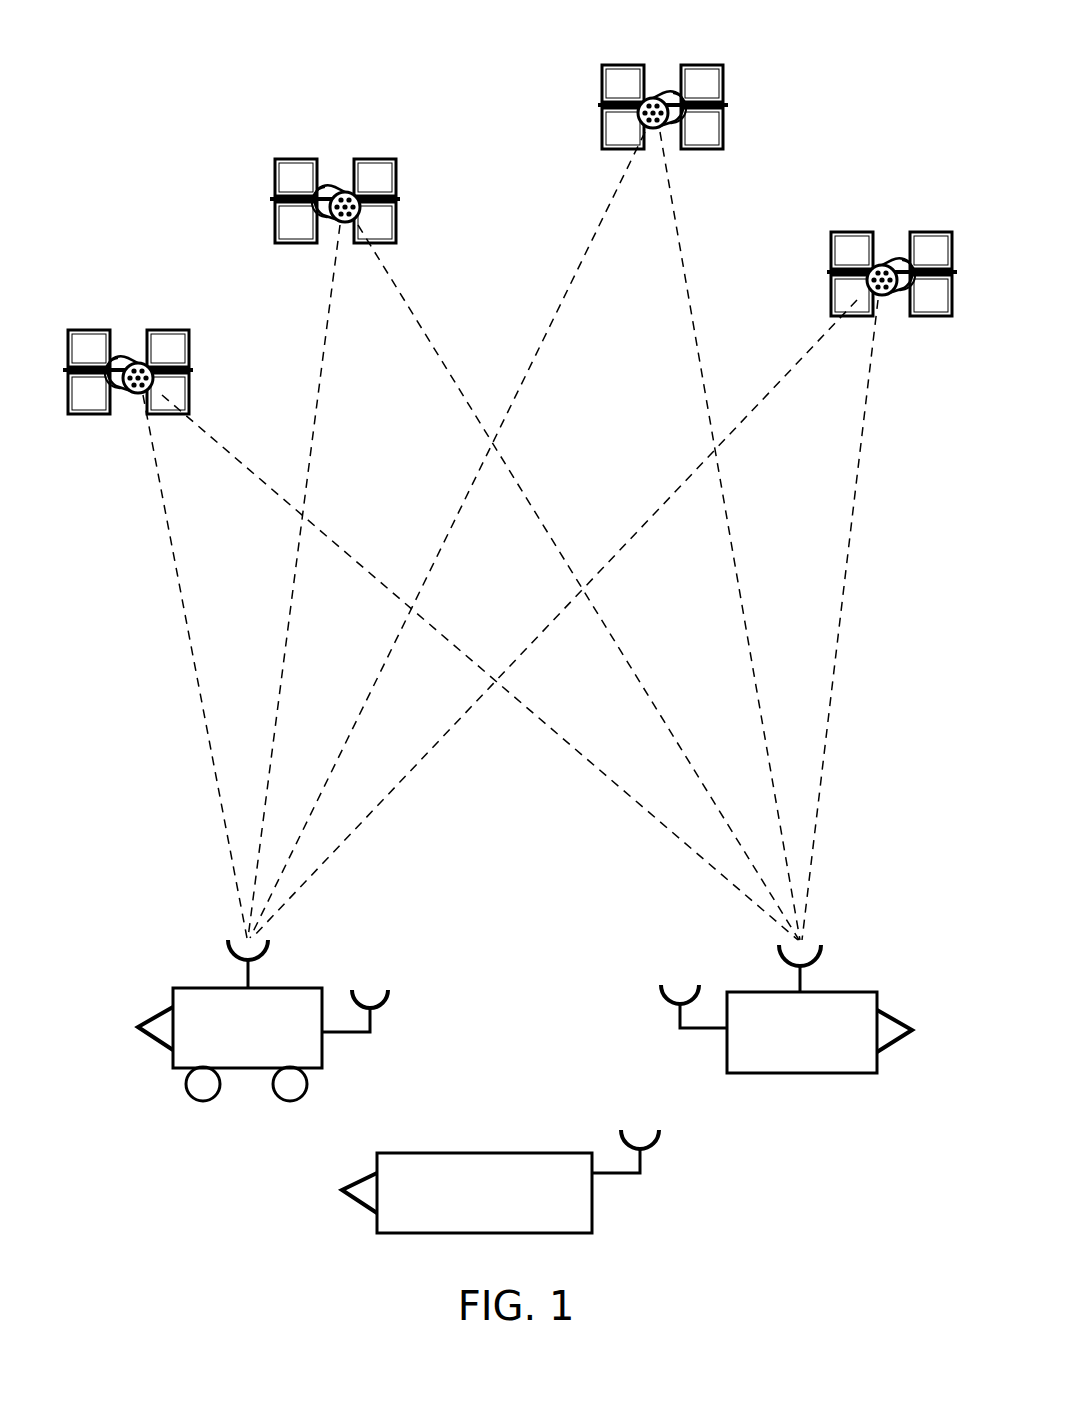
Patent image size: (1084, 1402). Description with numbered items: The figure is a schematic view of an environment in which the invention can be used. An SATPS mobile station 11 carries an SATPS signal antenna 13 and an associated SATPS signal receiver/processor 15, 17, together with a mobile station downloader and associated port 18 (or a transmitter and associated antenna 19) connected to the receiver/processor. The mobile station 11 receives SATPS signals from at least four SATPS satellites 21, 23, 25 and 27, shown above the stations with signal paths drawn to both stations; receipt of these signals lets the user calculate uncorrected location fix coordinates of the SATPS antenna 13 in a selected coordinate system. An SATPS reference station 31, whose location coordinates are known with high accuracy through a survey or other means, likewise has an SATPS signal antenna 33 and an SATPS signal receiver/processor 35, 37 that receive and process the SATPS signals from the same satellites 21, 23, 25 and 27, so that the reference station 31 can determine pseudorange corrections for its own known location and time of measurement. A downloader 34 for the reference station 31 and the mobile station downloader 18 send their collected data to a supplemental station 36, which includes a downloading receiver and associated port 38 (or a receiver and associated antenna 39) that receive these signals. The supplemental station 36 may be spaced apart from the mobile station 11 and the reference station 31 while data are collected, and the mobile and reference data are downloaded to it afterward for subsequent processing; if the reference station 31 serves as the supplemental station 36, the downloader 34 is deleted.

The SATPS mobile station 11 is at (323, 952).
The SATPS signal antenna 13 is at (247, 985).
The SATPS signal receiver/processor 15 is at (205, 1017).
The mobile receiver processor 17 is at (205, 1017).
The mobile station downloader and associated port 18 is at (165, 1027).
The mobile communications antenna 19 is at (372, 1008).
The SATPS satellite 21 is at (137, 358).
The SATPS satellite 23 is at (345, 188).
The SATPS satellite 25 is at (667, 90).
The SATPS satellite 27 is at (883, 262).
The SATPS reference station 31 is at (720, 953).
The SATPS signal antenna 33 is at (802, 982).
The downloader 34 is at (888, 1027).
The SATPS signal receiver/processor 35 is at (848, 1010).
The reference receiver processor 37 is at (802, 1032).
The supplemental station 36 is at (467, 1162).
The downloading receiver and associated port 38 is at (357, 1177).
The reference communications antenna 39 is at (678, 1008).